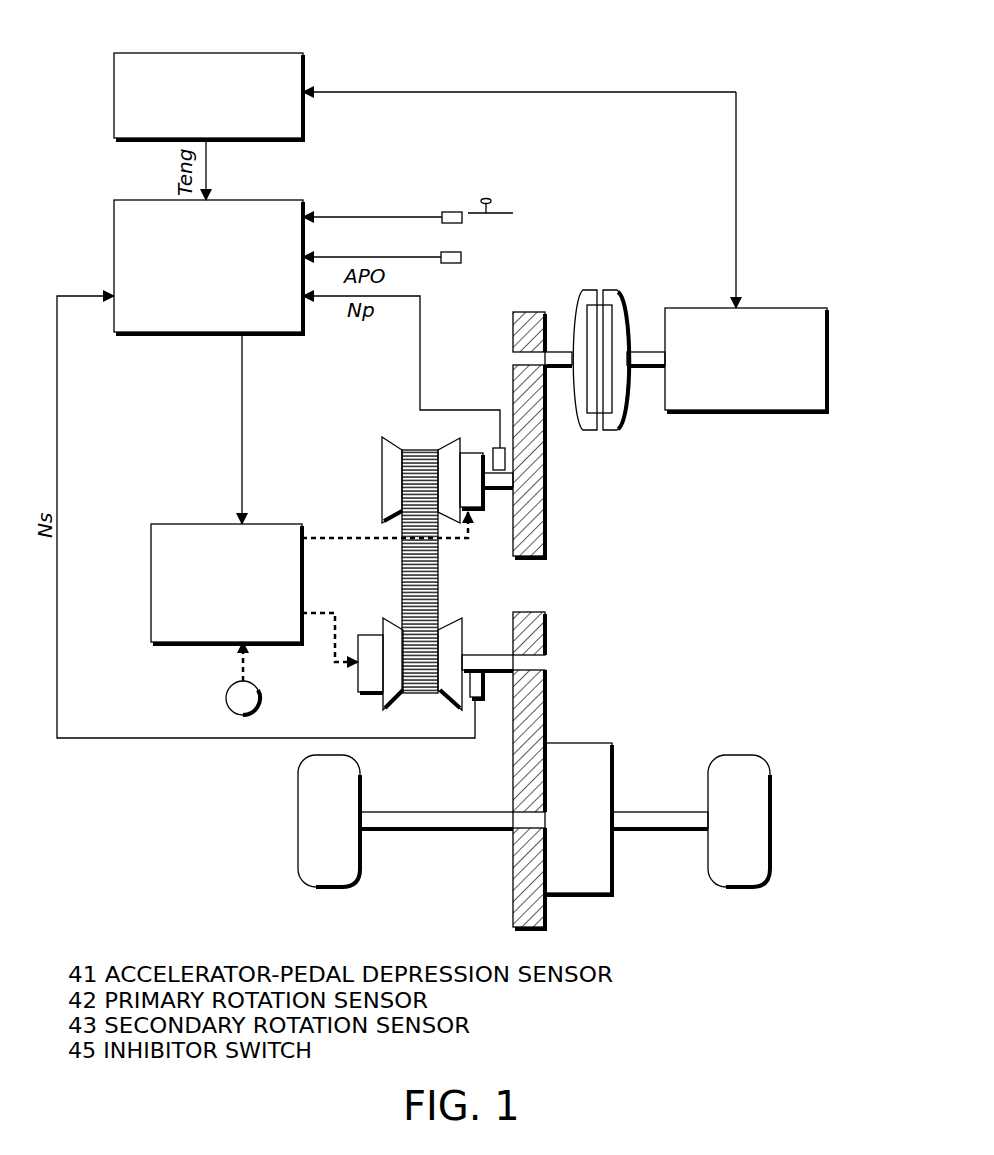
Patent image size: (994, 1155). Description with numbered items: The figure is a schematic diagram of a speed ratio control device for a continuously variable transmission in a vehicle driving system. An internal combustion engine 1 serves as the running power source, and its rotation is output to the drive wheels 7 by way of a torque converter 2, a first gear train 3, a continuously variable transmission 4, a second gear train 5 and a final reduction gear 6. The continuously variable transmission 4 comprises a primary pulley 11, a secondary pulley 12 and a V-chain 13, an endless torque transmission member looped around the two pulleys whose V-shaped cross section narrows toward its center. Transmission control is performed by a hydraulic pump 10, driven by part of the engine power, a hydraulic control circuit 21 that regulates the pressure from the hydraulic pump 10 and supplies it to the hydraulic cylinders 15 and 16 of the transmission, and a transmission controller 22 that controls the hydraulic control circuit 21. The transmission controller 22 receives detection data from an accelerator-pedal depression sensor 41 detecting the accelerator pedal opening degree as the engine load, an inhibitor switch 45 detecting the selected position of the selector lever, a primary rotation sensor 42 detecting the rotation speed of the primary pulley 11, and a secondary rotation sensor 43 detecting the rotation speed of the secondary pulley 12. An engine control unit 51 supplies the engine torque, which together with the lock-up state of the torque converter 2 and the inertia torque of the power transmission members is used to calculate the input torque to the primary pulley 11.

The internal combustion engine 1 is at (818, 308).
The torque converter 2 is at (615, 300).
The first gear train 3 is at (527, 310).
The continuously variable transmission 4 is at (358, 437).
The second gear train 5 is at (563, 683).
The final reduction gear 6 is at (565, 893).
The drive wheels 7 is at (360, 862).
The hydraulic pump 10 is at (228, 686).
The primary pulley 11 is at (393, 478).
The secondary pulley 12 is at (380, 683).
The V-chain 13 is at (418, 450).
The hydraulic cylinder 15 is at (466, 453).
The hydraulic cylinder 16 is at (358, 676).
The hydraulic control circuit 21 is at (200, 524).
The transmission controller 22 is at (290, 200).
The accelerator-pedal depression sensor 41 is at (462, 258).
The primary rotation sensor 42 is at (498, 448).
The secondary rotation sensor 43 is at (478, 700).
The inhibitor switch 45 is at (448, 212).
The engine control unit 51 is at (290, 53).